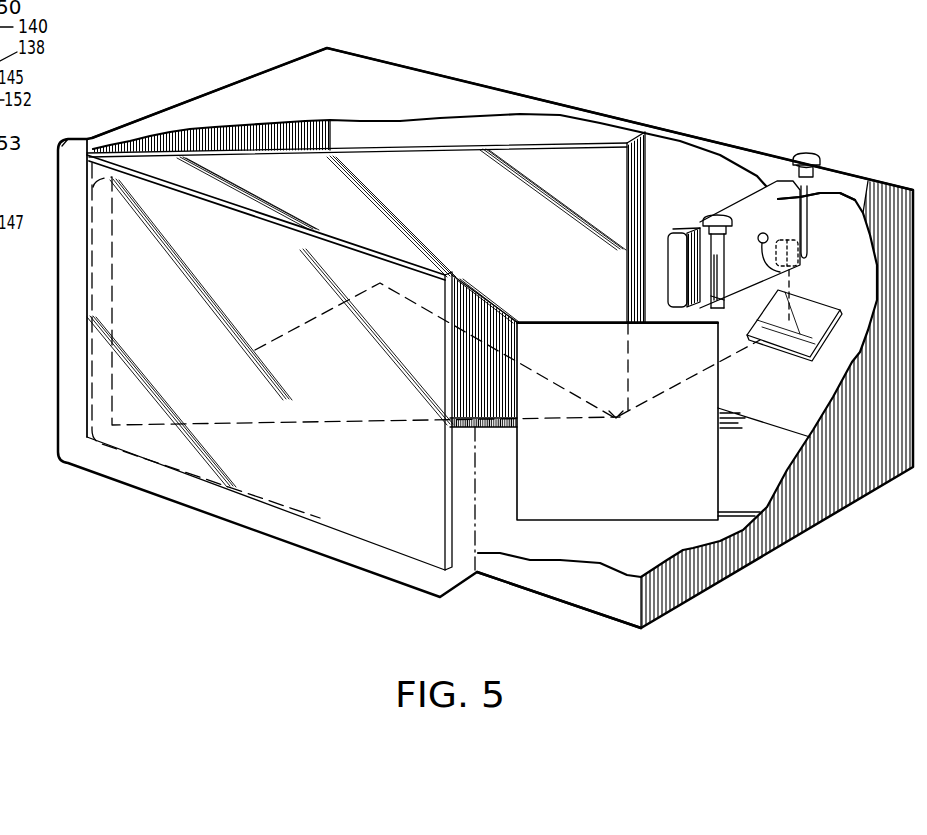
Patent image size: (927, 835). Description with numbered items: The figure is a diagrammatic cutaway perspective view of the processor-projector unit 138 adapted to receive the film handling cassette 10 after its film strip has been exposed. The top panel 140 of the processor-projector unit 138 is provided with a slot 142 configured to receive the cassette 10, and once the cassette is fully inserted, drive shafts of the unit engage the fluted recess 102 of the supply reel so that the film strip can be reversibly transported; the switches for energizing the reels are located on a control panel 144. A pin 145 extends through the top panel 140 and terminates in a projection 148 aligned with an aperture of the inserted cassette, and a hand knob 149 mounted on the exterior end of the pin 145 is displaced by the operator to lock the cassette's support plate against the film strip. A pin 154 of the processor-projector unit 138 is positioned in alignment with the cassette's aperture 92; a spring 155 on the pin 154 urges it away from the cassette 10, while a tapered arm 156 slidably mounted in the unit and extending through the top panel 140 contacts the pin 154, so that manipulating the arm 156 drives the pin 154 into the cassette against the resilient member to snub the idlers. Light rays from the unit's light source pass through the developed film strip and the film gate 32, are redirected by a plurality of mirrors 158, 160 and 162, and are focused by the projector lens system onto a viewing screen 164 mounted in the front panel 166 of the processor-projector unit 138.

The cassette 10 is at (757, 183).
The film gate 32 is at (798, 262).
The aperture 92 is at (707, 263).
The fluted recess 102 is at (773, 265).
The processor-projector unit 138 is at (556, 93).
The top panel 140 is at (417, 75).
The slot 142 is at (817, 185).
The control panel 144 is at (553, 588).
The pin 145 is at (838, 197).
The projection 148 is at (807, 231).
The hand knob 149 is at (806, 152).
The pin 154 is at (703, 272).
The spring 155 is at (710, 290).
The tapered arm 156 is at (707, 307).
The mirror 158 is at (797, 348).
The mirror 160 is at (707, 458).
The mirror 162 is at (365, 163).
The viewing screen 164 is at (160, 447).
The front panel 166 is at (72, 320).